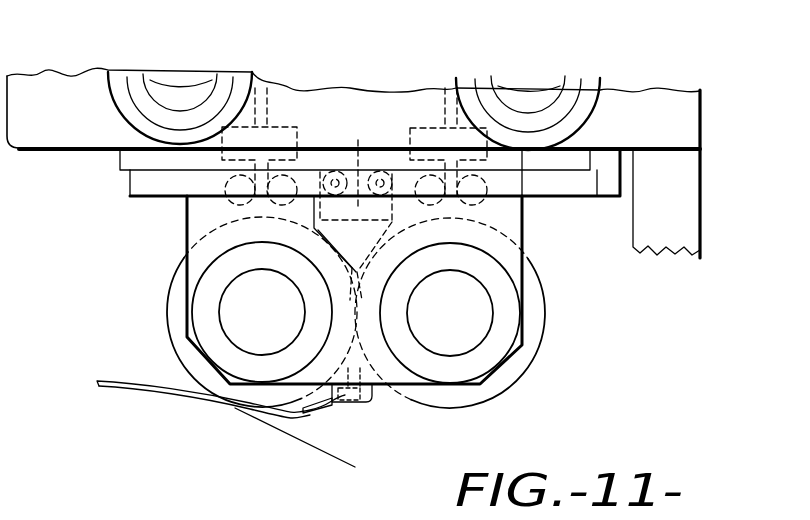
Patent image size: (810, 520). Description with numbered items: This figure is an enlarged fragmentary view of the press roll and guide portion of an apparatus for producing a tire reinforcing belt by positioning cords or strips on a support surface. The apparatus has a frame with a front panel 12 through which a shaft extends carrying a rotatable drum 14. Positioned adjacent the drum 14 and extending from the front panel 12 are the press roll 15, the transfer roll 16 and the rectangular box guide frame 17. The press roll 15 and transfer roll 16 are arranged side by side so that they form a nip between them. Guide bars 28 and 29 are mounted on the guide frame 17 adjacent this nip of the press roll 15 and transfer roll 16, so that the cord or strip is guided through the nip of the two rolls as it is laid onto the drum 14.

The front panel 12 is at (314, 200).
The rotatable drum 14 is at (97, 385).
The press roll 15 is at (174, 296).
The transfer roll 16 is at (537, 300).
The rectangular box guide frame 17 is at (688, 118).
The guide bar 28 is at (358, 140).
The guide bar 29 is at (350, 403).